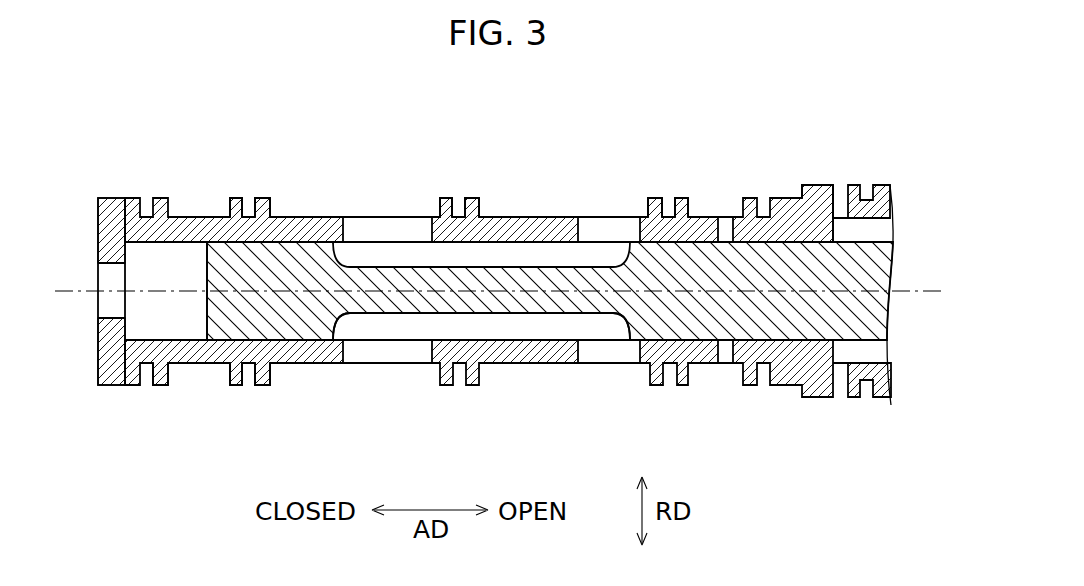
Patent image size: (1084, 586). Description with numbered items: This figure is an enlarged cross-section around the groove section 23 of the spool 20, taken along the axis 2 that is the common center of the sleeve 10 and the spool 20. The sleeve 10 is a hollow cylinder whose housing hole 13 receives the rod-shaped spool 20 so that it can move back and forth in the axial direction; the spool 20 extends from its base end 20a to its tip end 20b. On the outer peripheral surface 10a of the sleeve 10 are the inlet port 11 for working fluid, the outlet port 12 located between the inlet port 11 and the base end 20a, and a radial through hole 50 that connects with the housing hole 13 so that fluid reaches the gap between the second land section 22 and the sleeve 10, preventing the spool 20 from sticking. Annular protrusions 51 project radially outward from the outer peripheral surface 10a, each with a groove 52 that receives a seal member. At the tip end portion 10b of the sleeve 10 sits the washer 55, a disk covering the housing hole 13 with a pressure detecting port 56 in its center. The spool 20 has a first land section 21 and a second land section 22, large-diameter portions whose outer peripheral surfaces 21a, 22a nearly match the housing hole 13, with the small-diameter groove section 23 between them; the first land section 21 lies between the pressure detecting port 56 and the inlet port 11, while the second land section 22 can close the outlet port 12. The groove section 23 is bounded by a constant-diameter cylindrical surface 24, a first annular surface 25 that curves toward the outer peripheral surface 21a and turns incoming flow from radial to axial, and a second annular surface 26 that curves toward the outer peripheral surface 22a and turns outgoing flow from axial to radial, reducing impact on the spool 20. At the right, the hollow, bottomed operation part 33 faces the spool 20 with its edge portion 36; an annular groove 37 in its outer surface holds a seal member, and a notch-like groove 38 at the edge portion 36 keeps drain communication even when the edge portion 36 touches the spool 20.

The axis 2 is at (78, 292).
The sleeve 10 is at (421, 172).
The outer peripheral surface 10a is at (541, 222).
The tip end portion 10b is at (147, 212).
The inlet port 11 is at (373, 220).
The outlet port 12 is at (600, 225).
The housing hole 13 is at (172, 334).
The spool 20 is at (732, 304).
The base end 20a is at (874, 318).
The tip end 20b is at (207, 277).
The first land section 21 is at (259, 313).
The outer peripheral surface 21a is at (290, 366).
The second land section 22 is at (733, 327).
The outer peripheral surface 22a is at (676, 366).
The groove section 23 is at (462, 313).
The cylindrical surface 24 is at (510, 314).
The first annular surface 25 is at (343, 325).
The second annular surface 26 is at (618, 340).
The operation part 33 is at (875, 383).
The edge portion 36 is at (829, 202).
The annular groove 37 is at (868, 192).
The groove 38 is at (840, 190).
The through hole 50 is at (727, 220).
The protrusion 51 is at (266, 207).
The groove 52 is at (248, 213).
The washer 55 is at (108, 386).
The pressure detecting port 56 is at (112, 325).